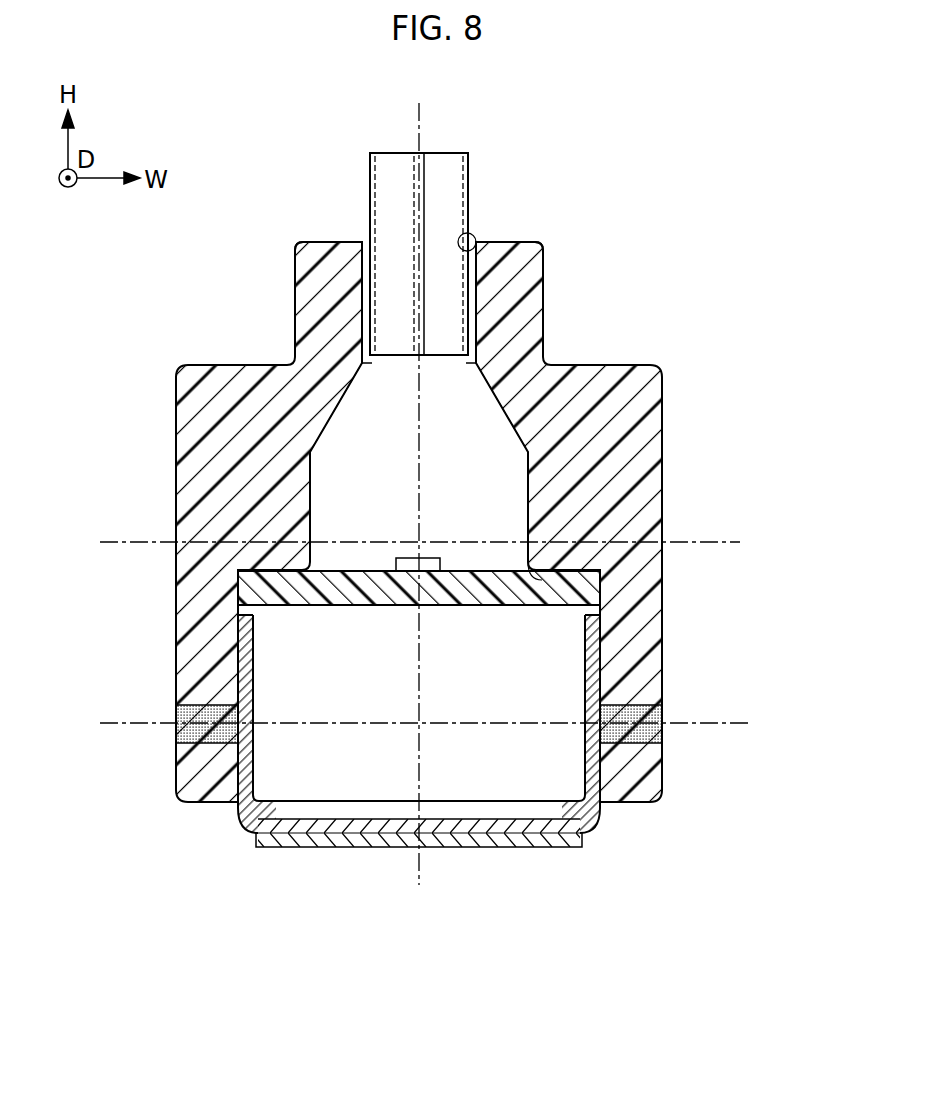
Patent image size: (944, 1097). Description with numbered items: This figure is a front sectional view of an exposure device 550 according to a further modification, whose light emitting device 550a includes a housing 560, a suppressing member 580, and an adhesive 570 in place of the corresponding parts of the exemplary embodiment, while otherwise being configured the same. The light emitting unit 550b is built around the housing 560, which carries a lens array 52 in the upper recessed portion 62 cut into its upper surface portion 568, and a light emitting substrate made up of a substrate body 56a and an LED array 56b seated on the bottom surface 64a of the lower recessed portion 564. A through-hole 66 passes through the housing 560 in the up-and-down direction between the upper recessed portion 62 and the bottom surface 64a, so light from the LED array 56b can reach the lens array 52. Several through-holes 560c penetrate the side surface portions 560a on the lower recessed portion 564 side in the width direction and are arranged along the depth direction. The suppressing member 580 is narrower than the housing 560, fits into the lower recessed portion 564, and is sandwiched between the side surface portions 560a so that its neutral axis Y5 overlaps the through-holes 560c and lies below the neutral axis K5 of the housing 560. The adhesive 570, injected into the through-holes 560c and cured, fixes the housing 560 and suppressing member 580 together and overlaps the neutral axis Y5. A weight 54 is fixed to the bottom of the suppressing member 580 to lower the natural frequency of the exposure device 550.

The lens array 52 is at (447, 153).
The weight 54 is at (530, 850).
The substrate body 56a is at (358, 607).
The LED array 56b is at (396, 559).
The upper recessed portion 62 is at (470, 233).
The bottom surface of the lower recessed portion 64a is at (534, 578).
The through-hole 66 is at (488, 470).
The holder assembly 550 is at (782, 977).
The light emitting device 550a is at (733, 898).
The holder upper portion 550b is at (646, 254).
The housing 560 is at (541, 243).
The side surface portions 560a is at (176, 583).
The through-holes 560c is at (176, 705).
The lower recessed portion 564 is at (477, 667).
The neck portion 568 is at (328, 242).
The adhesive 570 is at (176, 731).
The suppressing member 580 is at (592, 836).
The neutral axis of the housing K5 is at (742, 540).
The neutral axis of the suppressing member Y5 is at (750, 733).